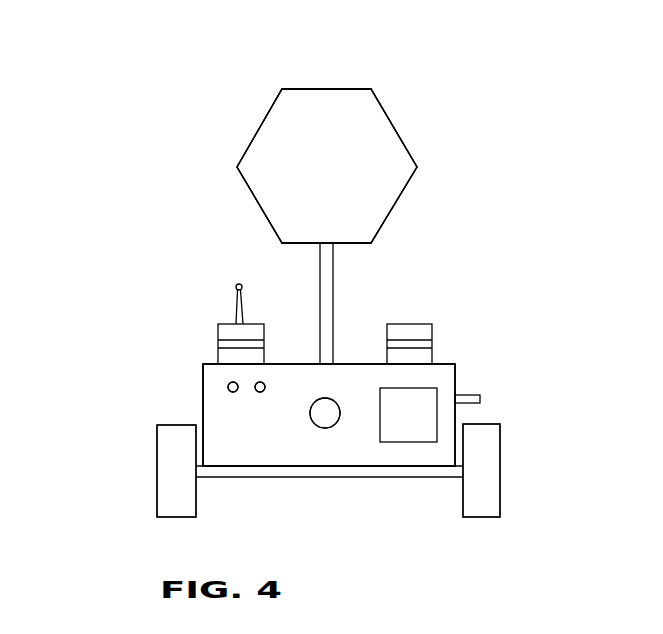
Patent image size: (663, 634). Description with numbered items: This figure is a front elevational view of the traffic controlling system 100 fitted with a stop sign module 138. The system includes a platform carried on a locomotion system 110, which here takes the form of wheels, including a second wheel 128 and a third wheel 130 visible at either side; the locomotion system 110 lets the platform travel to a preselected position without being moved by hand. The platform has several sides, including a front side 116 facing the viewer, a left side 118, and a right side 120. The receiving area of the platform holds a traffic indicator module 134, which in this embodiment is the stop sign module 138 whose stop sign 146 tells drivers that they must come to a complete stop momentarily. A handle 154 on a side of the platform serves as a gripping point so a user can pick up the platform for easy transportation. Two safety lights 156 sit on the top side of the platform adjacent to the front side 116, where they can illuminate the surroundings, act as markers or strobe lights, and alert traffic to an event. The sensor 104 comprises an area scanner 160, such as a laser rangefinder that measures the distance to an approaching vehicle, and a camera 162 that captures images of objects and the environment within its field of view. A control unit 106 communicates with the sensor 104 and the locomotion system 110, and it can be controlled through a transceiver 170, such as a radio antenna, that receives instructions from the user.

The traffic controlling system 100 is at (230, 100).
The sensor 104 is at (257, 383).
The control unit 106 is at (408, 435).
The locomotion system 110 is at (157, 495).
The front side 116 is at (238, 438).
The left side 118 is at (203, 405).
The right side 120 is at (458, 370).
The second wheel 128 is at (503, 470).
The third wheel 130 is at (176, 471).
The traffic indicator module 134 is at (393, 127).
The stop sign module 138 is at (327, 166).
The stop sign 146 is at (325, 113).
The handle 154 is at (483, 398).
The safety light 156 is at (218, 330).
The area scanner 160 is at (246, 387).
The camera 162 is at (325, 413).
The transceiver 170 is at (235, 295).